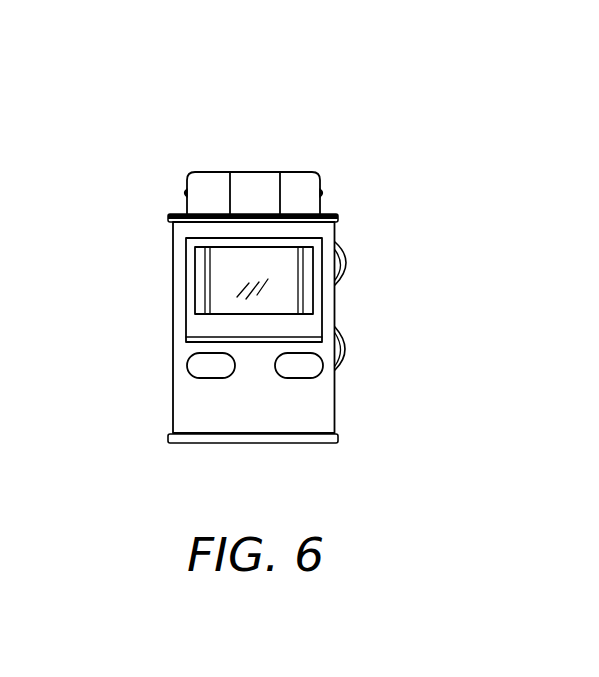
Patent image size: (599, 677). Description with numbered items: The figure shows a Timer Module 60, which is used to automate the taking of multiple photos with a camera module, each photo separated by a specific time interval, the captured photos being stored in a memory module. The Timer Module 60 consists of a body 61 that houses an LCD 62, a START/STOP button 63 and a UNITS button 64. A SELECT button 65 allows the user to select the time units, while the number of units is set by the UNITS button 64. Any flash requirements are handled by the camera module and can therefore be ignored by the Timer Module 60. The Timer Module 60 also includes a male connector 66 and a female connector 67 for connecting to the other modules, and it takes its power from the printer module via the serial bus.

The Timer Module 60 is at (362, 146).
The body 61 is at (335, 420).
The LCD 62 is at (220, 292).
The START/STOP button 63 is at (303, 365).
The UNITS button 64 is at (337, 242).
The SELECT button 65 is at (200, 364).
The male connector 66 is at (203, 172).
The female connector 67 is at (200, 443).